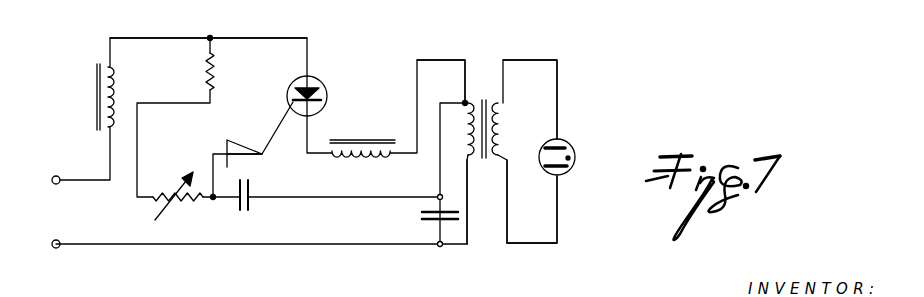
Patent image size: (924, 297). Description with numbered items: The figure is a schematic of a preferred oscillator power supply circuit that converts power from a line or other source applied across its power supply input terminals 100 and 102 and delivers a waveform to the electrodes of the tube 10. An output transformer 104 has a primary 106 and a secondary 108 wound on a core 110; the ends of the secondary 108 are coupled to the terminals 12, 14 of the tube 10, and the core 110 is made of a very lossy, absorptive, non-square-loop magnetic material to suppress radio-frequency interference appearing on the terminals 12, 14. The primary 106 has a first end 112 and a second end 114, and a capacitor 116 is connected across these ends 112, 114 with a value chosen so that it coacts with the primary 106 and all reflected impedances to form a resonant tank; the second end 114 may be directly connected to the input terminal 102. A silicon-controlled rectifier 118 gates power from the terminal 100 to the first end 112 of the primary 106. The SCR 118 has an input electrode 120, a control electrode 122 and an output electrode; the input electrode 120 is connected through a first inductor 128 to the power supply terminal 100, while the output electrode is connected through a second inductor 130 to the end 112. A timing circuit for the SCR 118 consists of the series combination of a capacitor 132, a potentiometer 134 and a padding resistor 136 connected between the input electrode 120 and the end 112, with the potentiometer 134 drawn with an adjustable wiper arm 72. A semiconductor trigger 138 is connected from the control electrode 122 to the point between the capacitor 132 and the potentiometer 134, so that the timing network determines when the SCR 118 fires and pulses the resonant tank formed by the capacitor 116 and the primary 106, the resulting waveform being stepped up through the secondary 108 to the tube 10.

The tube 10 is at (573, 148).
The terminal 12 is at (558, 110).
The terminal 14 is at (558, 205).
The potentiometer wiper 72 is at (178, 205).
The power supply input terminal 100 is at (58, 184).
The power supply input terminal 102 is at (58, 240).
The output transformer 104 is at (484, 78).
The primary 106 is at (466, 141).
The secondary 108 is at (504, 120).
The core 110 is at (487, 158).
The first end 112 is at (465, 102).
The second end 114 is at (468, 172).
The capacitor 116 is at (452, 225).
The silicon-controlled rectifier 118 is at (323, 82).
The input electrode 120 is at (309, 50).
The control electrode 122 is at (290, 104).
The first inductor 128 is at (113, 103).
The second inductor 130 is at (371, 158).
The capacitor 132 is at (250, 205).
The potentiometer 134 is at (165, 190).
The padding resistor 136 is at (213, 76).
The semiconductor trigger 138 is at (228, 163).